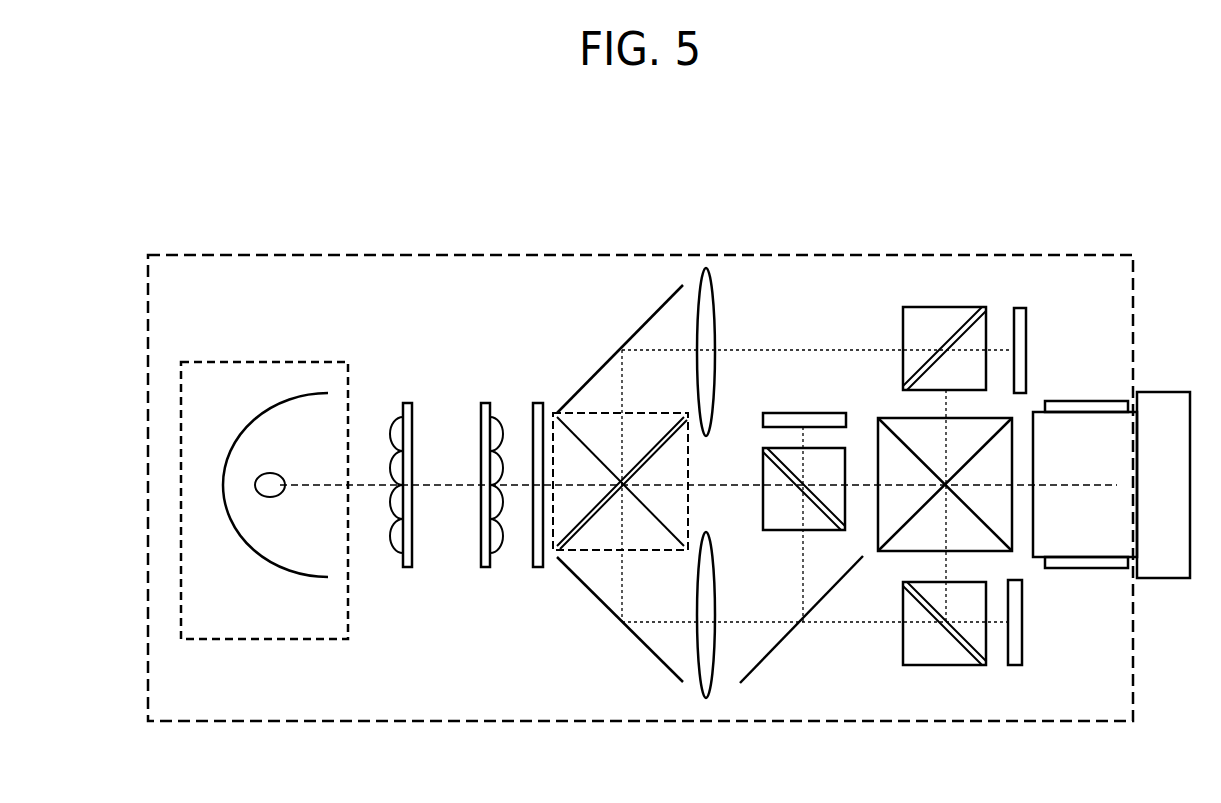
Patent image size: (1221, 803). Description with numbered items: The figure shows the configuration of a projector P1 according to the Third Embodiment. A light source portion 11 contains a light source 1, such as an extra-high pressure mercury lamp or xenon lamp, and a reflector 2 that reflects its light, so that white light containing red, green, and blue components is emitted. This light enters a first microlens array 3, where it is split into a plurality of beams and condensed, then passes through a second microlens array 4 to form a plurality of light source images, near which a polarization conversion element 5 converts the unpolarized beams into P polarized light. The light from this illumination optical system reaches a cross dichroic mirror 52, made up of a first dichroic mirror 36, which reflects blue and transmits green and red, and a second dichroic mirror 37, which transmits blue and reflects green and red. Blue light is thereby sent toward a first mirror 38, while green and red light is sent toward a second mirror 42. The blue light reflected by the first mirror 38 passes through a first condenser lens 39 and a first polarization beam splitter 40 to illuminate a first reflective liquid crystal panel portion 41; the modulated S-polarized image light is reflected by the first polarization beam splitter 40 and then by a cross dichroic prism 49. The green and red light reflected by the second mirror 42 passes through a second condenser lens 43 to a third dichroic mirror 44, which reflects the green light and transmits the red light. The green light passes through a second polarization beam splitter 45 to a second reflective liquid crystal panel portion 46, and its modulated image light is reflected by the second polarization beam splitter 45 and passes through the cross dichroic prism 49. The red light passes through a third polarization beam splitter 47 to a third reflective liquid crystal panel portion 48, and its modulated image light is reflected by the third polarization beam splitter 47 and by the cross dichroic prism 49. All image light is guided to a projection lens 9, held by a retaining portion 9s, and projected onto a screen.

The projector P1 is at (358, 255).
The light source 1 is at (267, 500).
The reflector 2 is at (277, 567).
The first microlens array 3 is at (403, 405).
The second microlens array 4 is at (482, 405).
The polarization conversion element 5 is at (533, 405).
The projection lens 9 is at (1067, 435).
The retaining portion 9s is at (1117, 403).
The light source portion 11 is at (350, 613).
The first dichroic mirror 36 is at (642, 468).
The second dichroic mirror 37 is at (657, 530).
The first mirror 38 is at (608, 358).
The first condenser lens 39 is at (707, 283).
The first polarization beam splitter 40 is at (935, 315).
The first reflective liquid crystal panel portion 41 is at (1028, 325).
The second mirror 42 is at (592, 595).
The second condenser lens 43 is at (705, 665).
The third dichroic mirror 44 is at (758, 668).
The second polarization beam splitter 45 is at (782, 497).
The second reflective liquid crystal panel portion 46 is at (785, 413).
The third polarization beam splitter 47 is at (932, 645).
The third reflective liquid crystal panel portion 48 is at (1020, 643).
The cross dichroic prism 49 is at (985, 542).
The cross dichroic mirror 52 is at (635, 413).